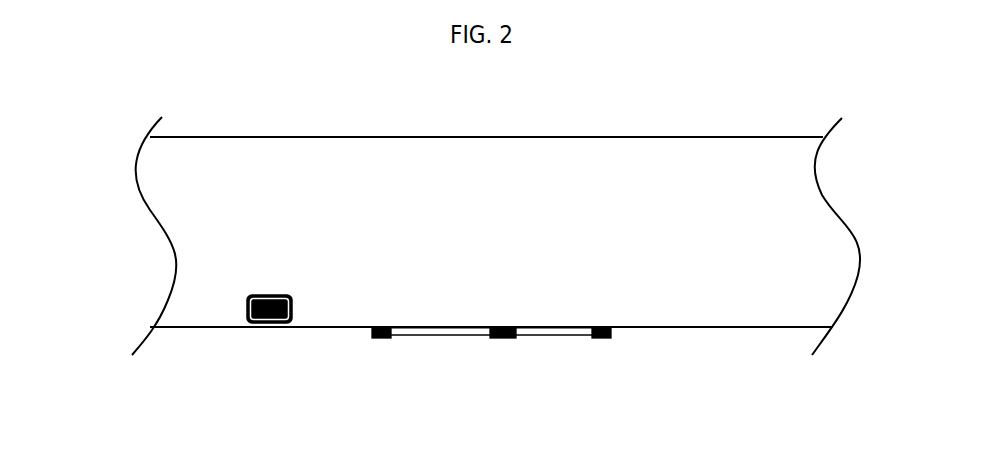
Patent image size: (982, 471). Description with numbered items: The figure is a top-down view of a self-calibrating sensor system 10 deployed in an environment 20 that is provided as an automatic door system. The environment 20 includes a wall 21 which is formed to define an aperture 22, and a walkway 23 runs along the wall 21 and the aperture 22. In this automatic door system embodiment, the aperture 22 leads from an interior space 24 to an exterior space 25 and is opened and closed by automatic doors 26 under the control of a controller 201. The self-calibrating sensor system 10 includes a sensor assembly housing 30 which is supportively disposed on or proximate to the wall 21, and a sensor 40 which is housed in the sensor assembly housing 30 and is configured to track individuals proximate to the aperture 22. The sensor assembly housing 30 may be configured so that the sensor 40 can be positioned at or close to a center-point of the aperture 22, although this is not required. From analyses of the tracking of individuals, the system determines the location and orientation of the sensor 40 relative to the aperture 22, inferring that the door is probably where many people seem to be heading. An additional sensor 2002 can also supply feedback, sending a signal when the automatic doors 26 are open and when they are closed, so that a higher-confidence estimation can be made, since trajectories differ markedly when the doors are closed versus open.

The self-calibrating sensor system 10 is at (190, 336).
The environment 20 is at (572, 115).
The wall 21 is at (328, 328).
The aperture 22 is at (490, 324).
The walkway 23 is at (237, 205).
The interior space 24 is at (461, 261).
The exterior space 25 is at (461, 366).
The automatic doors 26 is at (467, 335).
The sensor assembly housing 30 is at (247, 300).
The sensor 40 is at (265, 323).
The controller 201 is at (382, 338).
The additional sensor 2002 is at (515, 327).